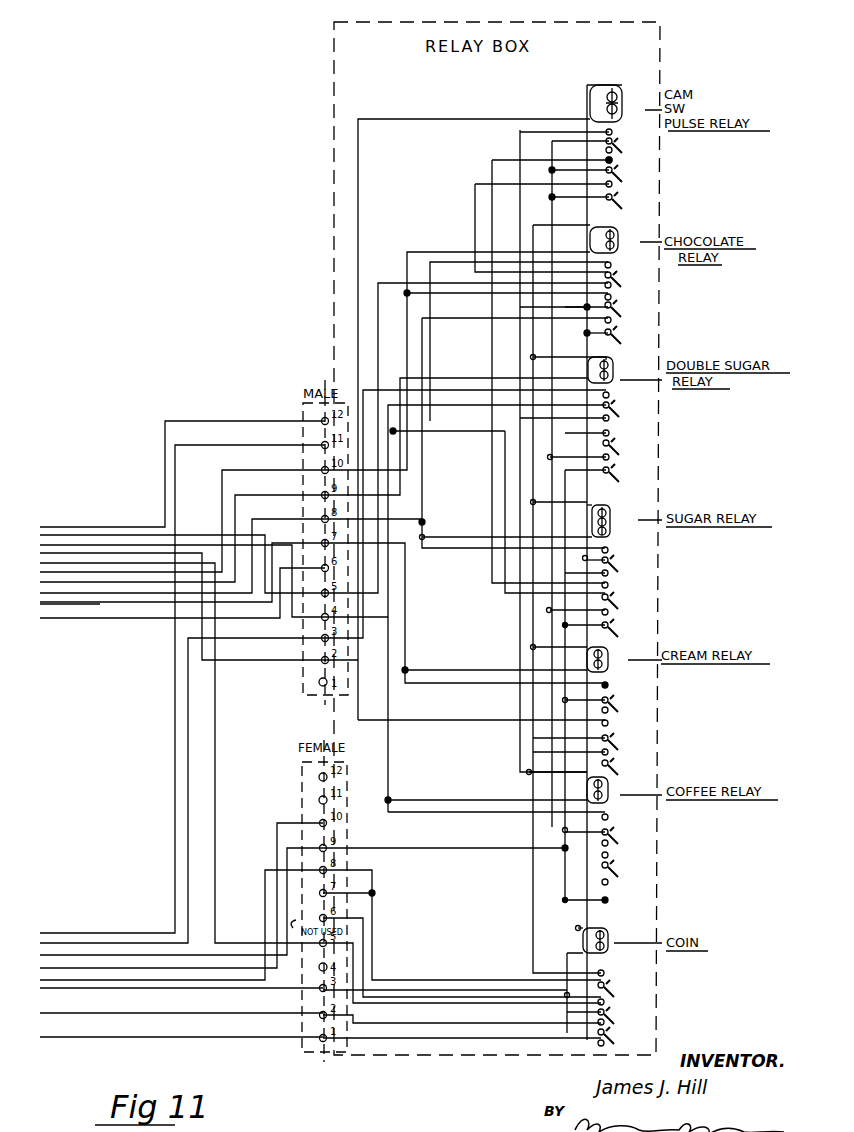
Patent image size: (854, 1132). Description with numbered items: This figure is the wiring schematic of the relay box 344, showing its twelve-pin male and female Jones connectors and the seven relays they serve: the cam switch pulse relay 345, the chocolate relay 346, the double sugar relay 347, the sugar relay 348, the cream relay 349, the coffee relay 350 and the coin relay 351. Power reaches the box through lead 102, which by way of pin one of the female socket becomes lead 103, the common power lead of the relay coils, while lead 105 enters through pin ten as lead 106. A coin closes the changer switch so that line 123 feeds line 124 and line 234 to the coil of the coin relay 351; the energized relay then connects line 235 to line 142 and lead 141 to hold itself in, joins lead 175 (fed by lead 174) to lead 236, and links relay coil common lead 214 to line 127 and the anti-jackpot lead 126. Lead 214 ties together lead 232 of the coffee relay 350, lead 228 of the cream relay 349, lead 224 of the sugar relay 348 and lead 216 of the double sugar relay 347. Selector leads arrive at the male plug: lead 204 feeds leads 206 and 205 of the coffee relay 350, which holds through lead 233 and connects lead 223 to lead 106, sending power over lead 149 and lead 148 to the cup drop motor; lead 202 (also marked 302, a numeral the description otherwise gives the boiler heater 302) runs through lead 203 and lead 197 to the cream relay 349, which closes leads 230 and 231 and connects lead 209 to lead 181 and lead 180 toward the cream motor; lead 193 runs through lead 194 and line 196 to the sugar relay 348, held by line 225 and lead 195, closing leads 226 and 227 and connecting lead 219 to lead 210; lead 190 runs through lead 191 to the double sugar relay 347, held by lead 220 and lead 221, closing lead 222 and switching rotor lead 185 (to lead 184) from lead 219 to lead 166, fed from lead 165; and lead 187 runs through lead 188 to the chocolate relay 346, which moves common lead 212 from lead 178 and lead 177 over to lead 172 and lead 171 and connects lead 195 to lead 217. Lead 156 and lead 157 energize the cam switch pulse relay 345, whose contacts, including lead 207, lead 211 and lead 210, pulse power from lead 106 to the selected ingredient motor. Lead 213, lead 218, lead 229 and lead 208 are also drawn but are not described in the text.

The relay box 344 is at (334, 57).
The cam switch pulse relay 345 is at (620, 98).
The chocolate relay 346 is at (618, 240).
The double sugar relay 347 is at (616, 362).
The sugar relay 348 is at (612, 512).
The cream relay 349 is at (610, 653).
The coffee relay 350 is at (610, 785).
The coin relay 351 is at (608, 930).
The lead 103 is at (565, 556).
The lead 106 is at (485, 508).
The lead 157 is at (474, 411).
The lead 181 is at (465, 690).
The lead 209 is at (555, 450).
The lead 210 is at (544, 364).
The lead 211 is at (580, 171).
The lead 212 is at (532, 228).
The conductor 213 is at (580, 197).
The lead 214 is at (560, 596).
The lead 188 is at (457, 357).
The lead 172 is at (430, 352).
The lead 178 is at (472, 283).
The lead 205 is at (498, 552).
The lead 216 is at (585, 307).
The lead 195 is at (515, 427).
The lead 217 is at (599, 339).
The conductor 218 is at (602, 354).
The lead 191 is at (456, 430).
The lead 166 is at (465, 510).
The lead 185 is at (465, 604).
The lead 220 is at (447, 425).
The lead 219 is at (500, 602).
The lead 221 is at (582, 438).
The lead 222 is at (577, 453).
The lead 223 is at (583, 681).
The lead 224 is at (599, 498).
The lead 194 is at (375, 513).
The line 196 is at (506, 531).
The lead 203 is at (465, 609).
The lead 197 is at (496, 662).
The line 225 is at (587, 564).
The lead 226 is at (576, 600).
The lead 227 is at (584, 616).
The lead 228 is at (585, 607).
The conductor 229 is at (584, 705).
The lead 230 is at (569, 744).
The lead 231 is at (569, 756).
The lead 232 is at (558, 770).
The lead 206 is at (486, 795).
The lead 233 is at (584, 826).
The lead 149 is at (445, 841).
The line 234 is at (592, 921).
The line 235 is at (592, 1058).
The lead 236 is at (584, 1018).
The lead 207 is at (620, 997).
The line 124 is at (456, 986).
The line 127 is at (462, 918).
The conductor 208 is at (349, 888).
The lead 175 is at (462, 977).
The line 142 is at (462, 1016).
The lead 171 is at (182, 464).
The lead 156 is at (182, 679).
The lead 187 is at (48, 620).
The lead 190 is at (145, 620).
The lead 193 is at (75, 630).
The lead 202 is at (182, 563).
The boiler heater 302 is at (167, 606).
The lead 177 is at (182, 555).
The lead 184 is at (124, 544).
The lead 180 is at (155, 552).
The lead 174 is at (181, 753).
The lead 204 is at (115, 620).
The lead 165 is at (88, 942).
The lead 148 is at (152, 954).
The lead 126 is at (54, 970).
The line 123 is at (108, 982).
The lead 105 is at (157, 989).
The lead 141 is at (181, 1004).
The lead 102 is at (320, 1029).